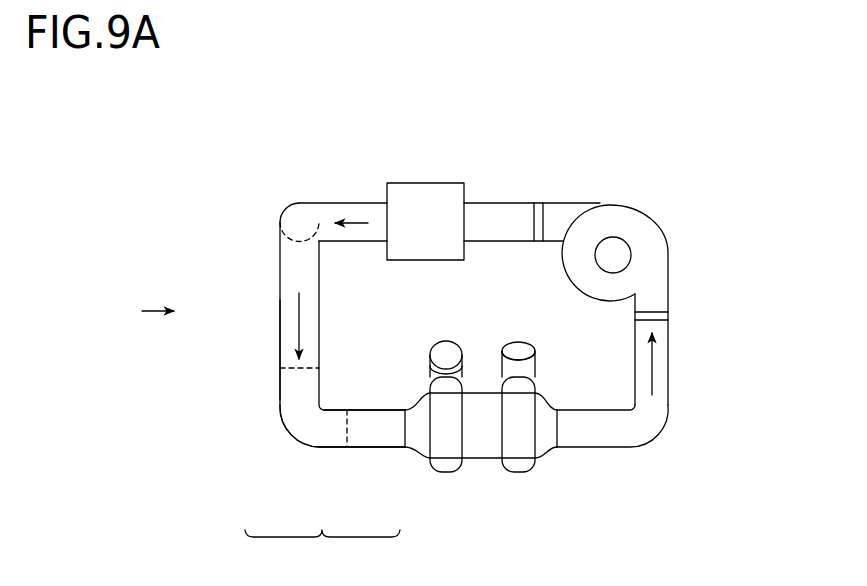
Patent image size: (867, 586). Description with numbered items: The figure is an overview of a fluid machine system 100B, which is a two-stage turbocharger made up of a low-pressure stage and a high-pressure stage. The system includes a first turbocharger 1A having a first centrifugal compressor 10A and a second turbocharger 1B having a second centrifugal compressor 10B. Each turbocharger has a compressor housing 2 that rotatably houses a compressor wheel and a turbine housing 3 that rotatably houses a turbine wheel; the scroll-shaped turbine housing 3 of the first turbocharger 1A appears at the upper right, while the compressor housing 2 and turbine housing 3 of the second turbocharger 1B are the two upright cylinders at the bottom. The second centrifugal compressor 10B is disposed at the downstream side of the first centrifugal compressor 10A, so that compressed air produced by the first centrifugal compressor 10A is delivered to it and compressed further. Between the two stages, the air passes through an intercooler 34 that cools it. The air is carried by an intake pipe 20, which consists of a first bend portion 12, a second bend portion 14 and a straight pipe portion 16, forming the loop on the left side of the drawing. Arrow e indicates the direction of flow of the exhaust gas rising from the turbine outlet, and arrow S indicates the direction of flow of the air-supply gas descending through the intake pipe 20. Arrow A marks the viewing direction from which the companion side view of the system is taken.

The fluid machine system 100B is at (286, 172).
The first bend portion 12 is at (295, 266).
The second bend portion 14 is at (285, 366).
The straight pipe portion 16 is at (370, 433).
The intake pipe 20 is at (283, 455).
The second centrifugal compressor 10B is at (322, 551).
The intercooler 34 is at (405, 182).
The first centrifugal compressor 10A is at (540, 194).
The compressor housing 2 is at (555, 218).
The turbine housing 3 is at (645, 245).
The first turbocharger 1A is at (686, 146).
The second turbocharger 1B is at (472, 510).
The arrow s S is at (293, 308).
The direction A is at (146, 311).
The arrow e is at (652, 355).